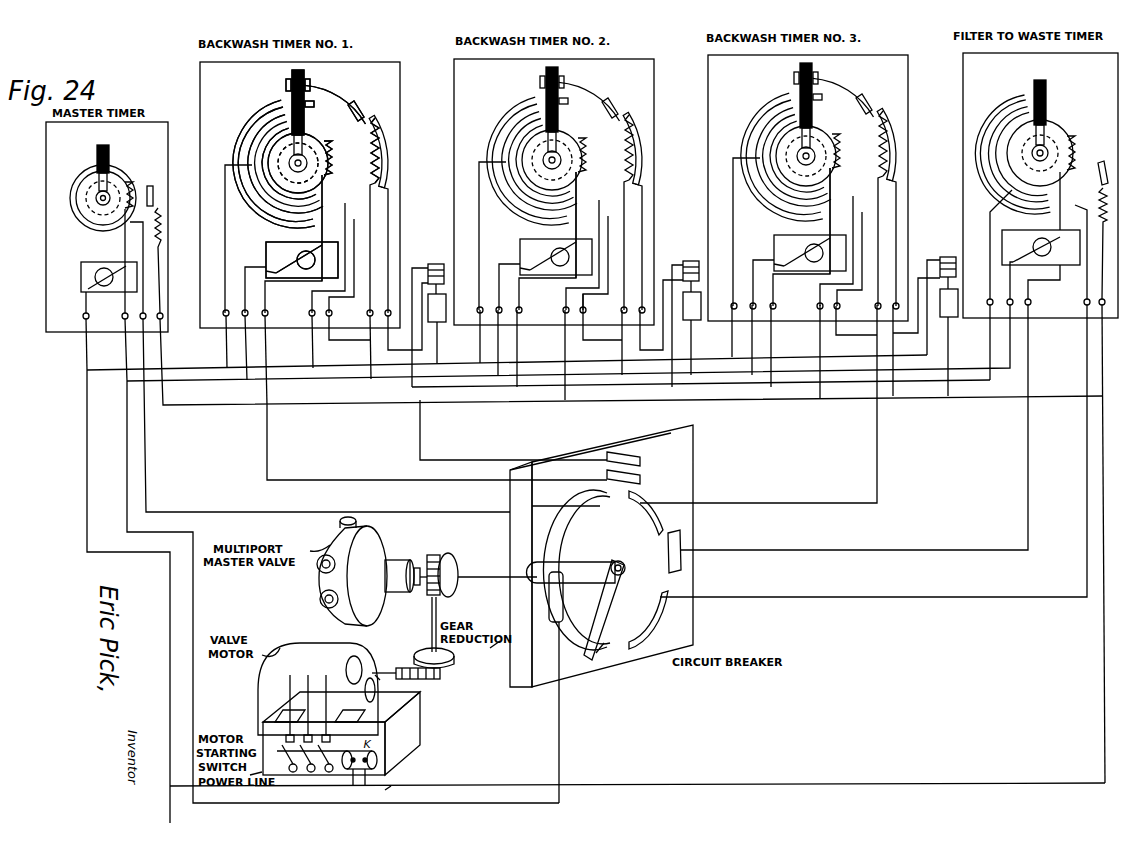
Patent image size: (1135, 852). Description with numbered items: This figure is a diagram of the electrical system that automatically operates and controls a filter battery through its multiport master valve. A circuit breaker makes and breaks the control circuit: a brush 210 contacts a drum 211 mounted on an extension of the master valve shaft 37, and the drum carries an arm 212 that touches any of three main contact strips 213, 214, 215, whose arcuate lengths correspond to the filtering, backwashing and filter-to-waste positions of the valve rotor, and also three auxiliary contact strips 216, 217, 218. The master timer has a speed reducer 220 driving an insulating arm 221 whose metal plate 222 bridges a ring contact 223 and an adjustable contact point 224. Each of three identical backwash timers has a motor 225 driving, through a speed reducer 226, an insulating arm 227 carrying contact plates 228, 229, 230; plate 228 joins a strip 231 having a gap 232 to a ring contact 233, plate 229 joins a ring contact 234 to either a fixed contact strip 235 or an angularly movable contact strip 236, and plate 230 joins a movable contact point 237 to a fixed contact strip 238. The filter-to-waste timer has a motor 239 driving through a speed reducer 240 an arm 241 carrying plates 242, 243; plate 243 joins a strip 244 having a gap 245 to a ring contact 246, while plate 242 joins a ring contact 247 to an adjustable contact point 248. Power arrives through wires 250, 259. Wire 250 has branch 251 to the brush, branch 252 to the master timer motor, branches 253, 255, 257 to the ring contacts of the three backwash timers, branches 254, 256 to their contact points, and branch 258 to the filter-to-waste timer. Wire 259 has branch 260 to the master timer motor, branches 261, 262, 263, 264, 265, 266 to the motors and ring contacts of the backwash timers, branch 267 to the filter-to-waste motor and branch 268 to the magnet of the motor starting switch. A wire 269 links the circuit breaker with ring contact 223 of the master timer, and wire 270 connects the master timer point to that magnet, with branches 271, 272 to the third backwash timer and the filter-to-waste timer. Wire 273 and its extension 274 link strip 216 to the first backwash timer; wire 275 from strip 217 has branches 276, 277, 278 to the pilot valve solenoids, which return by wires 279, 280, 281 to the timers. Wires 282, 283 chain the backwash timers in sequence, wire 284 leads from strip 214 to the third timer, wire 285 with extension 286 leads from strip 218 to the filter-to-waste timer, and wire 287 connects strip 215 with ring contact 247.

The master valve shaft 37 is at (428, 568).
The brush 210 is at (554, 570).
The drum 211 is at (606, 562).
The arm 212 is at (608, 615).
The main contact strip 213 is at (580, 528).
The main contact strip 214 is at (645, 505).
The main contact strip 215 is at (654, 626).
The auxiliary contact strip 216 is at (641, 480).
The auxiliary contact strip 217 is at (641, 460).
The auxiliary contact strip 218 is at (683, 562).
The speed reducer 220 is at (131, 180).
The arm 221 is at (104, 146).
The metal plate 222 is at (96, 160).
The ring contact 223 is at (95, 172).
The adjustable contact point 224 is at (149, 186).
The motor 225 is at (266, 247).
The speed reducer 226 is at (298, 170).
The arm 227 is at (291, 74).
The contact plate 228 is at (298, 163).
The contact plate 229 is at (296, 103).
The contact plate 230 is at (285, 84).
The strip 231 is at (248, 161).
The gap 232 is at (319, 158).
The ring contact 233 is at (280, 115).
The ring contact 234 is at (246, 141).
The fixed contact strip 235 is at (256, 125).
The angularly movable contact strip 236 is at (350, 109).
The movable contact point 237 is at (370, 111).
The fixed contact strip 238 is at (343, 93).
The motor 239 is at (1020, 233).
The speed reducer 240 is at (1040, 163).
The arm 241 is at (1042, 80).
The plate 242 is at (1060, 100).
The plate 243 is at (1070, 108).
The strip 244 is at (1014, 108).
The gap 245 is at (1024, 106).
The ring contact 246 is at (1002, 120).
The ring contact 247 is at (1078, 125).
The angularly adjustable contact point 248 is at (1104, 162).
The wire 250 is at (125, 493).
The branch 251 is at (561, 700).
The branch 252 is at (124, 345).
The branch 253 is at (225, 346).
The branch 254 is at (315, 356).
The branch 255 is at (424, 348).
The branch 256 is at (621, 348).
The branch 257 is at (665, 351).
The branch 258 is at (950, 327).
The wire 259 is at (88, 430).
The branch 260 is at (85, 353).
The branch 261 is at (249, 345).
The branch 262 is at (268, 356).
The branch 263 is at (518, 359).
The branch 264 is at (564, 339).
The branch 265 is at (772, 354).
The branch 266 is at (819, 335).
The branch 267 is at (946, 362).
The branch 268 is at (256, 789).
The conductor 269 is at (148, 443).
The wire 270 is at (1068, 398).
The branch 271 is at (894, 349).
The branch 272 is at (1106, 345).
The wire 273 is at (268, 449).
The extension 274 is at (310, 238).
The wire 275 is at (422, 440).
The branch 276 is at (414, 338).
The branch 277 is at (674, 343).
The branch 278 is at (929, 339).
The wire 279 is at (90, 262).
The wire 280 is at (586, 313).
The wire 281 is at (838, 311).
The wire 282 is at (400, 245).
The wire 283 is at (820, 229).
The wire 284 is at (760, 503).
The wire 285 is at (762, 550).
The extension 286 is at (1058, 214).
The wire 287 is at (766, 597).